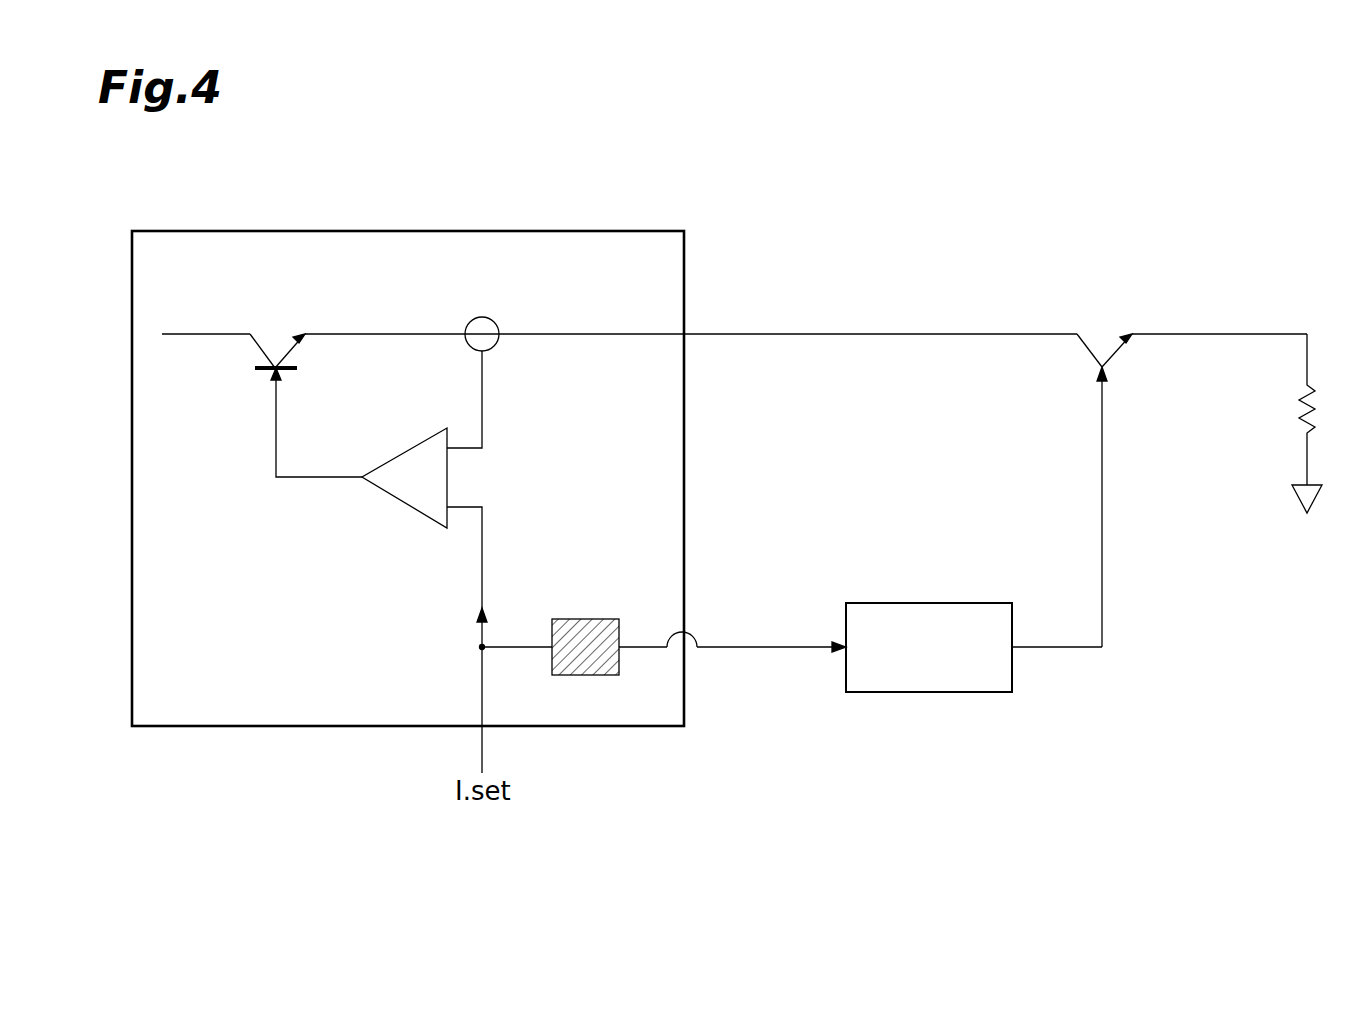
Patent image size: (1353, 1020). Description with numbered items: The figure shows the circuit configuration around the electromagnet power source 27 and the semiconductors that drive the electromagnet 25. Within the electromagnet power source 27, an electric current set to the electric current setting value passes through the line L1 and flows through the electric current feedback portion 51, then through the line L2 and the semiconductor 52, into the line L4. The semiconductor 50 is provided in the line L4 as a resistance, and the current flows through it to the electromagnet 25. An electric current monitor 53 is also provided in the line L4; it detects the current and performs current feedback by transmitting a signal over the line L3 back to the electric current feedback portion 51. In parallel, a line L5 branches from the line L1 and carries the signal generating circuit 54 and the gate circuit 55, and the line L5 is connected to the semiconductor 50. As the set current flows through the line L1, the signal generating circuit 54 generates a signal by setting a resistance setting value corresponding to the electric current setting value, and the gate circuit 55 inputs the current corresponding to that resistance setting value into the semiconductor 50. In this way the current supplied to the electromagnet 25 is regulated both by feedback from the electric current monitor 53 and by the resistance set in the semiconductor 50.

The electromagnet power source 27 is at (604, 231).
The semiconductor 52 is at (272, 325).
The electric current monitor 53 is at (484, 317).
The electric current feedback portion 51 is at (413, 512).
The signal generating circuit 54 is at (609, 619).
The gate circuit 55 is at (980, 694).
The semiconductor 50 is at (1104, 325).
The electromagnet 25 is at (1290, 412).
The line L1 is at (483, 558).
The line L2 is at (328, 480).
The line L3 is at (483, 396).
The line L4 is at (908, 334).
The line L5 is at (770, 682).